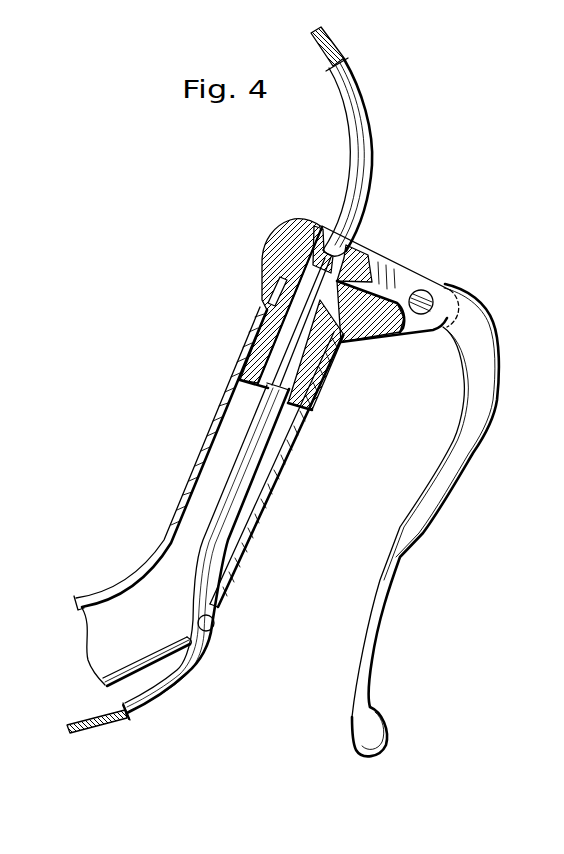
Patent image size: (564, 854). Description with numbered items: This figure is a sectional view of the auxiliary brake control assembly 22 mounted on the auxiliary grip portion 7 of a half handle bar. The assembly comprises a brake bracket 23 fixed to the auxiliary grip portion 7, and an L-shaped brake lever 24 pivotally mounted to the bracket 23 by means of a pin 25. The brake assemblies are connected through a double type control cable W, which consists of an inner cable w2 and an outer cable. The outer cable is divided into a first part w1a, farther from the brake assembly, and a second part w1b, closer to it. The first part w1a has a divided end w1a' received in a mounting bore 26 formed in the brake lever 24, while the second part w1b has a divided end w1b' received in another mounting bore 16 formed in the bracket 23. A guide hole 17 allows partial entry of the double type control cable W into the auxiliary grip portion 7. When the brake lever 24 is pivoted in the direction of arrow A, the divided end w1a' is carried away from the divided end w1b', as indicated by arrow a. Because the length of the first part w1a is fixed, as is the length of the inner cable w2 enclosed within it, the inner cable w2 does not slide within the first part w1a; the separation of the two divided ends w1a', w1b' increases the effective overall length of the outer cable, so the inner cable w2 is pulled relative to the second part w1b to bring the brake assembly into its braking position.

The auxiliary grip portion 7 is at (228, 412).
The mounting bore 16 is at (270, 390).
The guide hole 17 is at (213, 630).
The auxiliary brake control assembly 22 is at (497, 304).
The brake bracket 23 is at (408, 262).
The brake lever 24 is at (468, 433).
The pin 25 is at (420, 314).
The mounting bore 26 is at (316, 232).
The outer cable first part w1a is at (383, 141).
The divided end of outer cable first part w1a' is at (359, 289).
The outer cable second part w1b is at (209, 687).
The divided end of outer cable second part w1b' is at (283, 466).
The inner cable w2 is at (78, 731).
The double type control cable W is at (141, 719).
The arrow A is at (360, 592).
The arrow a is at (323, 210).